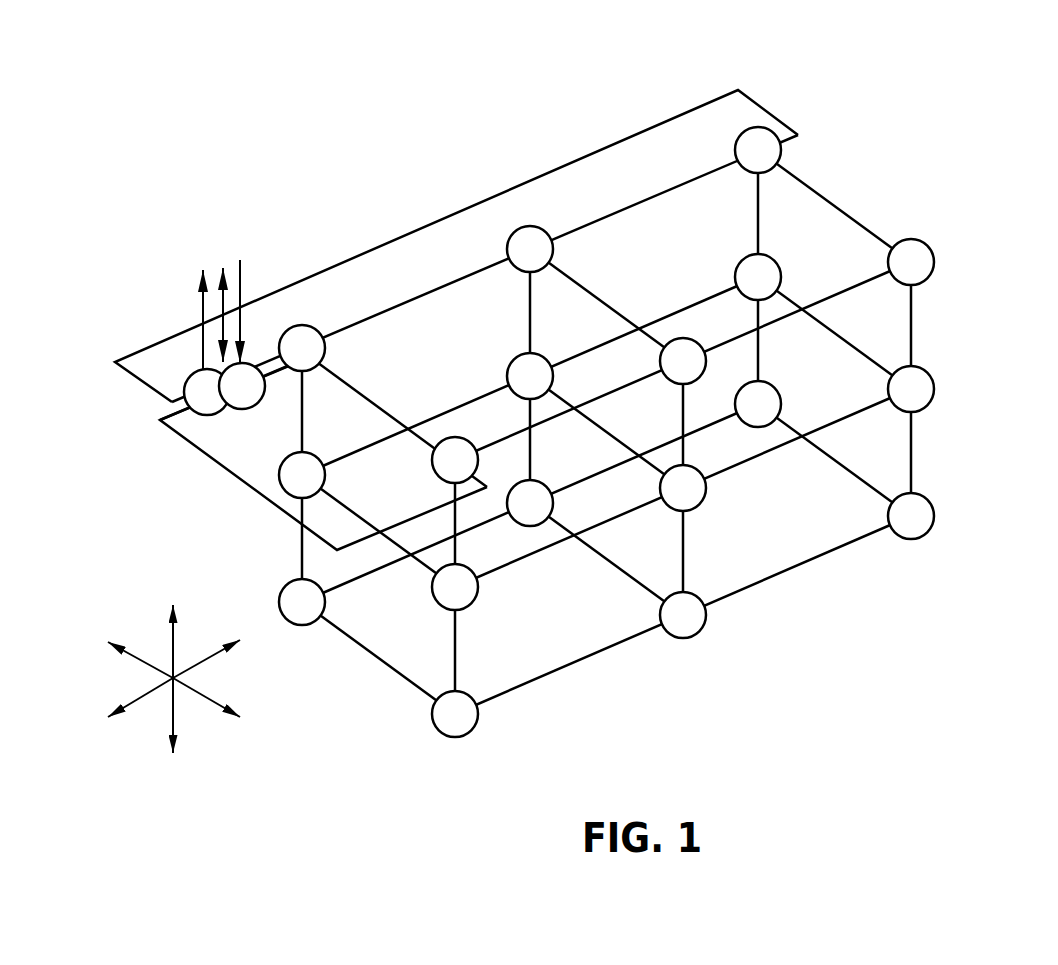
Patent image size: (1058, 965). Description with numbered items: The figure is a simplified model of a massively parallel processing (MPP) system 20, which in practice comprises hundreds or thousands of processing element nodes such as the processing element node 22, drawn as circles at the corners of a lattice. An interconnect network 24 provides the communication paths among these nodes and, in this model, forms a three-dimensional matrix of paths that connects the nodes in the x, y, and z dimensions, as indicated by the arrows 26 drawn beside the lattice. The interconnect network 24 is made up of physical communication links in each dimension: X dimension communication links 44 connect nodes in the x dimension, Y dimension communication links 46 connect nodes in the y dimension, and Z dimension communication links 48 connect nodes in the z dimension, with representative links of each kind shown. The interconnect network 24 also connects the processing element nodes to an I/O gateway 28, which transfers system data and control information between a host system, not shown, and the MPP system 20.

The massively parallel processing (MPP) system 20 is at (445, 123).
The processing element node 22 is at (693, 618).
The interconnect network 24 is at (549, 400).
The arrows 26 is at (218, 755).
The I/O gateway 28 is at (197, 388).
The X dimension communication links 44 is at (632, 203).
The Y dimension communication links 46 is at (455, 648).
The Z dimension communication links 48 is at (862, 220).